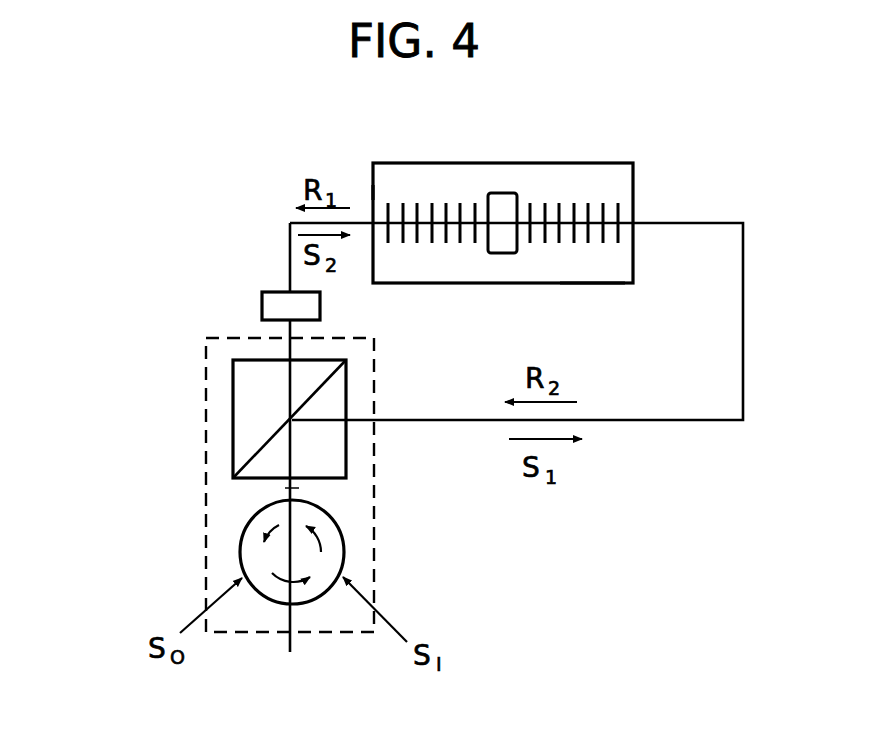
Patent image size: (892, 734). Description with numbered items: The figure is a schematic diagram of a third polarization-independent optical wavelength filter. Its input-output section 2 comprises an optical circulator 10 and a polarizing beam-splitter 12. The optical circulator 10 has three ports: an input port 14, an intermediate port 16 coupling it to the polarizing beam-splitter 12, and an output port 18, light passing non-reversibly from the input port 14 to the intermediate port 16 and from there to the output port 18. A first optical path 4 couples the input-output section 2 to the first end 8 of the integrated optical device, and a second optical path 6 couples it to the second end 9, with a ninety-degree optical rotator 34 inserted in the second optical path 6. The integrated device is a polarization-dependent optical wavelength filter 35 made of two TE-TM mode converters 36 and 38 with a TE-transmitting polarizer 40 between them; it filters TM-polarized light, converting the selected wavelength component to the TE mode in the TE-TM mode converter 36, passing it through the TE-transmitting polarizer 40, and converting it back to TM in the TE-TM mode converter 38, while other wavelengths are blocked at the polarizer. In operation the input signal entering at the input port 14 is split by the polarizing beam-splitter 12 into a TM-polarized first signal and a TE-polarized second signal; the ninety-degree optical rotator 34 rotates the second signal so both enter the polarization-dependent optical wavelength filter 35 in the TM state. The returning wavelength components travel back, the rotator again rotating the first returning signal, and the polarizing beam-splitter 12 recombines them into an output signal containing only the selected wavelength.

The input-output section 2 is at (205, 456).
The first optical path 4 is at (743, 310).
The second optical path 6 is at (290, 258).
The first end 8 is at (633, 190).
The second end 9 is at (373, 190).
The optical circulator 10 is at (343, 545).
The polarizing beam-splitter 12 is at (346, 380).
The input port 14 is at (380, 612).
The intermediate port 16 is at (295, 488).
The output port 18 is at (218, 592).
The ninety-degree optical rotator 34 is at (262, 310).
The polarization-dependent optical wavelength filter 35 is at (592, 283).
The TE-TM mode converter 36 is at (585, 205).
The TE-TM mode converter 38 is at (418, 195).
The TE-transmitting polarizer 40 is at (505, 193).